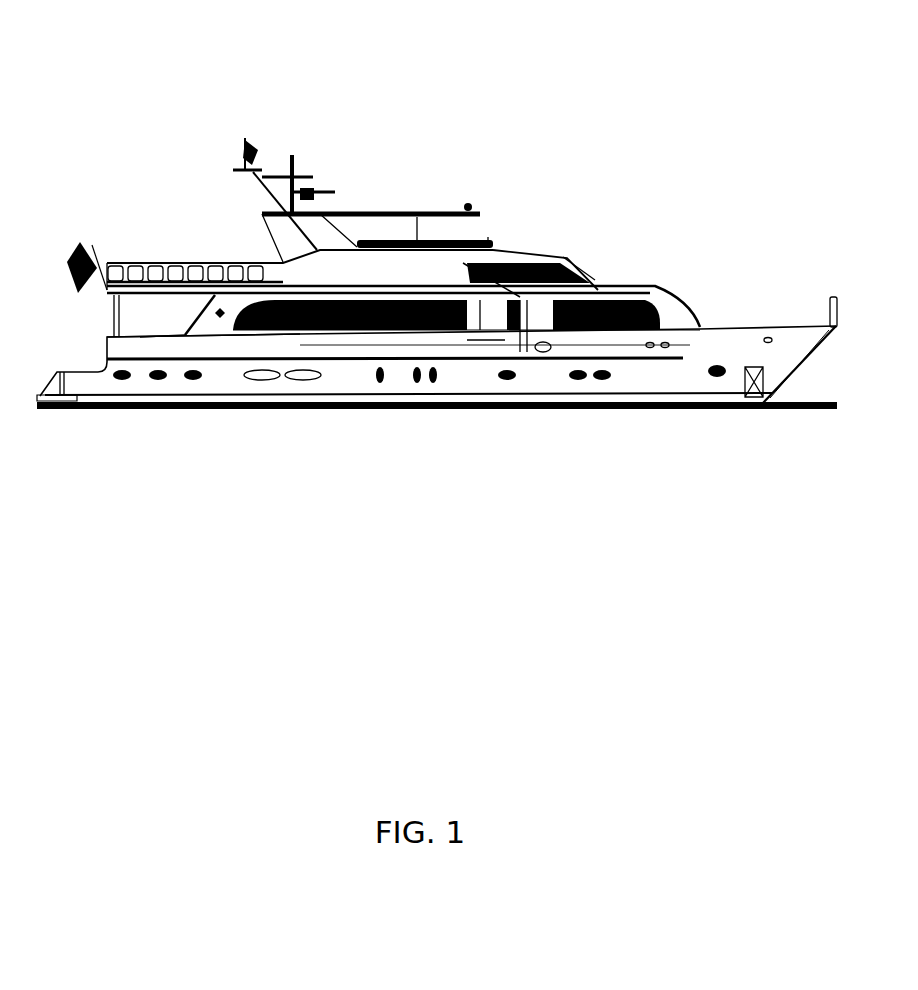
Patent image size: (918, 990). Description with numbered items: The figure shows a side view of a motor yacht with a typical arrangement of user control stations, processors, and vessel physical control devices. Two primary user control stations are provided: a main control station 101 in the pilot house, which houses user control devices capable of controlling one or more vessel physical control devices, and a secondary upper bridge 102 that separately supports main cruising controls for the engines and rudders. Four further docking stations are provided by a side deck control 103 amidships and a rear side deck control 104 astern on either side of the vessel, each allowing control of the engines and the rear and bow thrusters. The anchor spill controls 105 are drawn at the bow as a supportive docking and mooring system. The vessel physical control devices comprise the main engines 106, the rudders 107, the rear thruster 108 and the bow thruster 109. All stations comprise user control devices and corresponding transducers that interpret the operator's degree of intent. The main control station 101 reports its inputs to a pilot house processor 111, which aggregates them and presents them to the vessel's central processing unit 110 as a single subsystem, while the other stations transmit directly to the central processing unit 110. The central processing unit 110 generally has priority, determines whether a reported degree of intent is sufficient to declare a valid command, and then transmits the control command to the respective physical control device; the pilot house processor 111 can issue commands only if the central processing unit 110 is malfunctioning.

The main control station 101 is at (581, 250).
The secondary upper bridge 102 is at (446, 229).
The side deck control 103 is at (485, 353).
The rear side deck control 104 is at (171, 315).
The Anchor Spill Controls 105 is at (783, 303).
The main engines 106 is at (285, 393).
The rudders 107 is at (115, 436).
The rear thruster 108 is at (186, 436).
The bow thruster 109 is at (692, 434).
The central processing unit 110 is at (534, 392).
The pilot house processor 111 is at (540, 248).